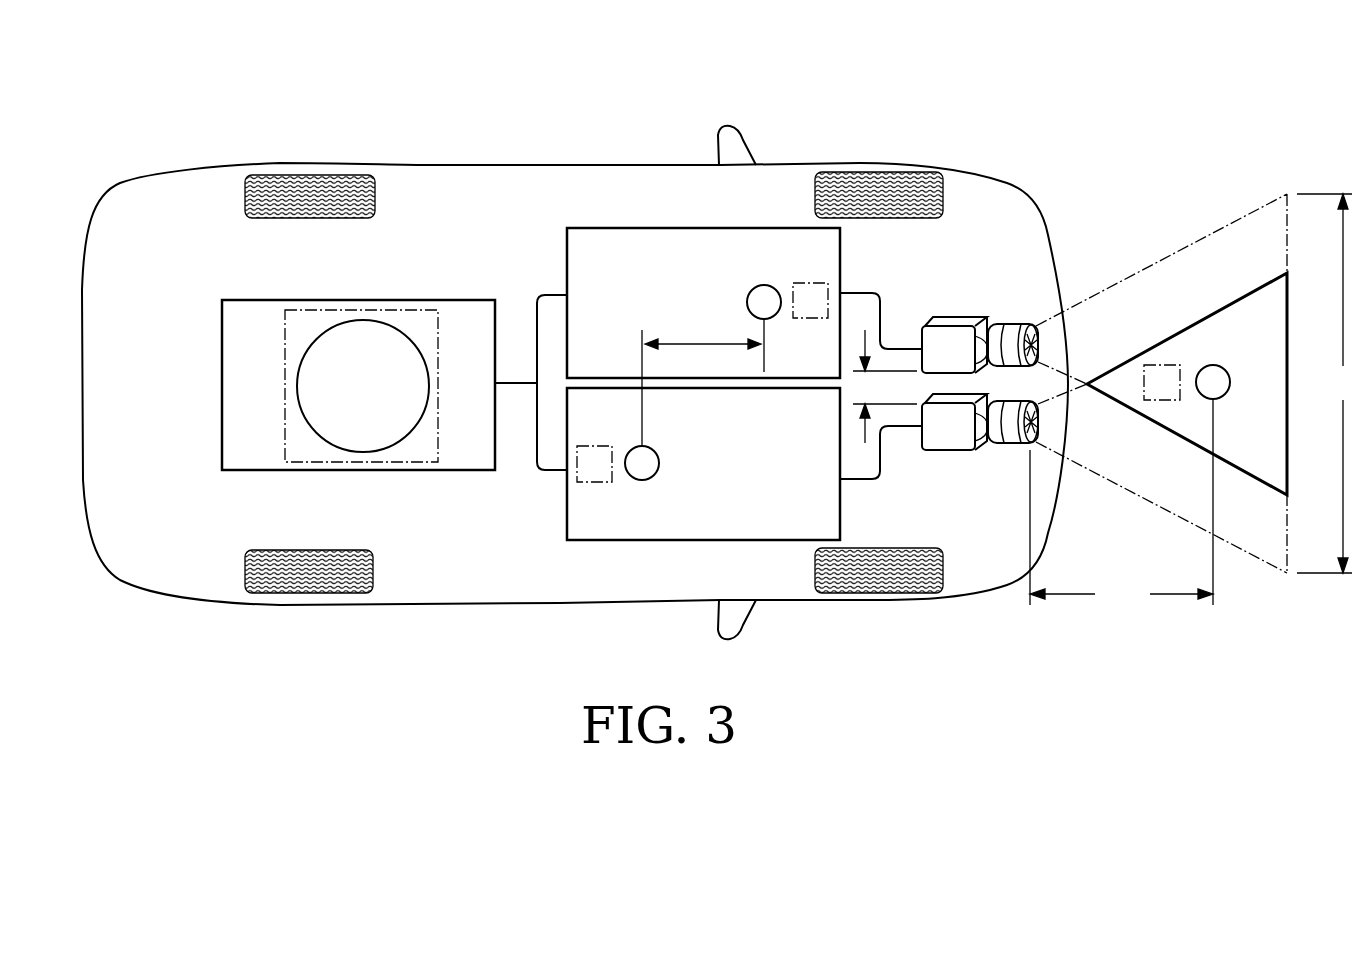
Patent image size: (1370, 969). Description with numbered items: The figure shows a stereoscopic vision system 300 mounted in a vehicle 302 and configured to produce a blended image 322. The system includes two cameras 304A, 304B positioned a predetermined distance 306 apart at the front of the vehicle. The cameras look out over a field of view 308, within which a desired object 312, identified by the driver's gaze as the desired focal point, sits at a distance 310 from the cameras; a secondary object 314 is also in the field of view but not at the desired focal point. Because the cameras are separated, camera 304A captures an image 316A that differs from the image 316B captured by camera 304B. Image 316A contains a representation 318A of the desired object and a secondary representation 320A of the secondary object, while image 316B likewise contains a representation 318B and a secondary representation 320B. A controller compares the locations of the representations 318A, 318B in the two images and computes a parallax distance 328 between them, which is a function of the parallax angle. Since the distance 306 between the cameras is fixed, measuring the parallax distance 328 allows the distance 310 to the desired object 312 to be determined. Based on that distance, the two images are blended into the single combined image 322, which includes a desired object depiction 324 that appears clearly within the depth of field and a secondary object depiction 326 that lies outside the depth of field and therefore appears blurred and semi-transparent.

The stereoscopic vision system 300 is at (568, 76).
The vehicle 302 is at (535, 164).
The camera 304A is at (1000, 324).
The camera 304B is at (1000, 443).
The predetermined distance 306 is at (865, 440).
The field of view 308 is at (1331, 383).
The distance 310 is at (1121, 503).
The desired object 312 is at (1213, 365).
The secondary object 314 is at (1163, 365).
The image 316A is at (708, 228).
The image 316B is at (702, 540).
The representation 318A is at (745, 303).
The representation 318B is at (660, 463).
The secondary representation 320A is at (810, 283).
The secondary representation 320B is at (597, 482).
The blended image 322 is at (379, 300).
The desired object depiction 324 is at (314, 432).
The secondary object depiction 326 is at (327, 310).
The parallax distance 328 is at (705, 342).